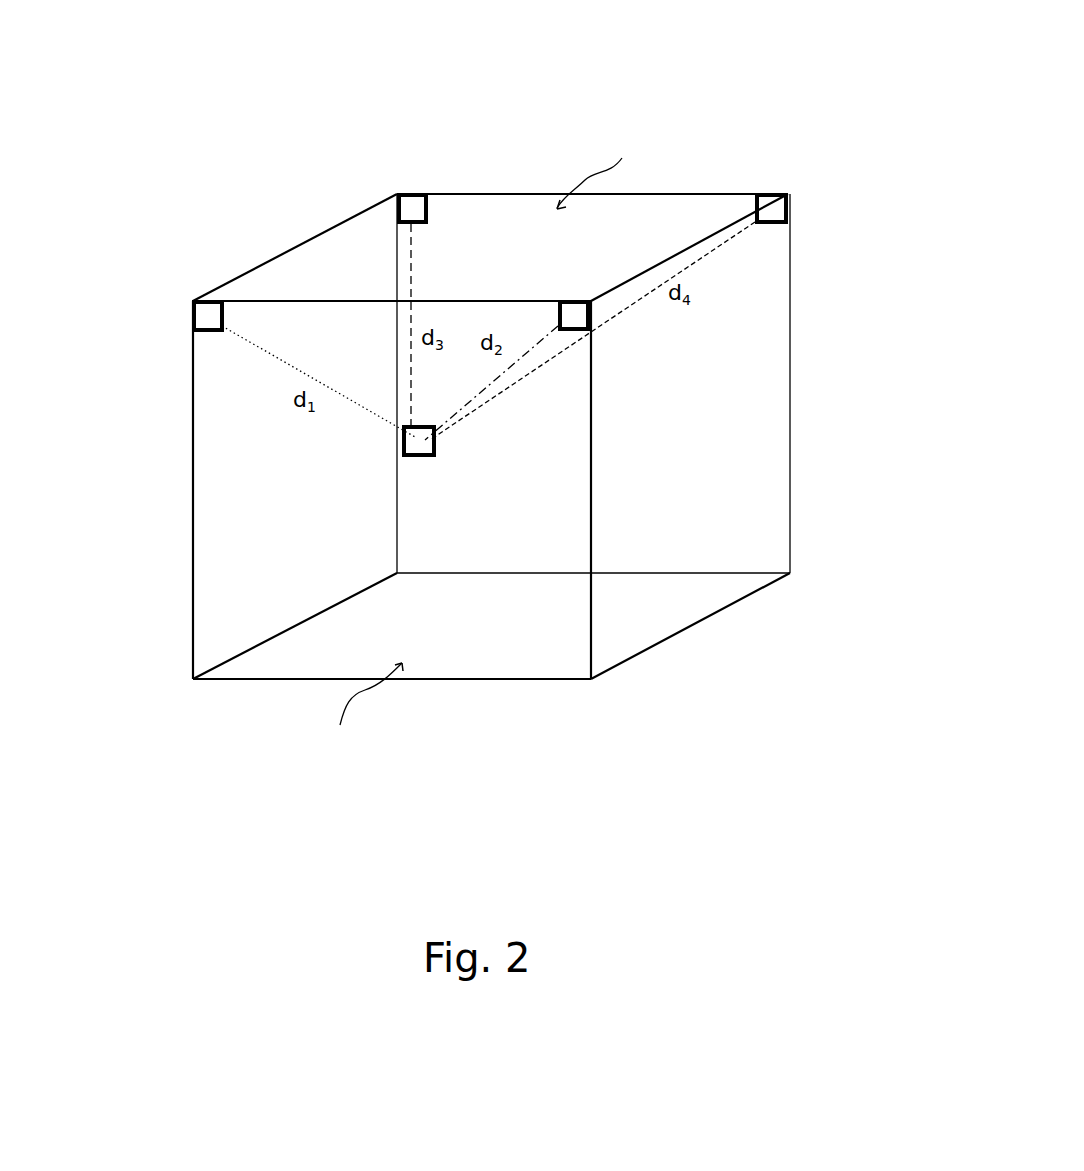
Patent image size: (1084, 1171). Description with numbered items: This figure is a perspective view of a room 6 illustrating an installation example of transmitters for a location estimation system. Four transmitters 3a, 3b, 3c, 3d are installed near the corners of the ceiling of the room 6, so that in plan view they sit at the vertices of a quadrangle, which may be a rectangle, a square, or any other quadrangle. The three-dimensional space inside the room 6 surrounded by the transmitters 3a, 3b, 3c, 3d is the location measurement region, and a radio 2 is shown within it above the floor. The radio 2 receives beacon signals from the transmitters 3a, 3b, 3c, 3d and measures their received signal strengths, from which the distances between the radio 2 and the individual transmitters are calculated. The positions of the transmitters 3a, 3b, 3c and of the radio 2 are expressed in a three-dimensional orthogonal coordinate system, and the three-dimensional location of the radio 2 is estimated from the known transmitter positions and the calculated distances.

The room 6 is at (616, 53).
The radio 2 is at (425, 458).
The transmitter 3a is at (195, 300).
The transmitter 3b is at (591, 316).
The transmitter 3c is at (406, 193).
The transmitter 3d is at (770, 193).